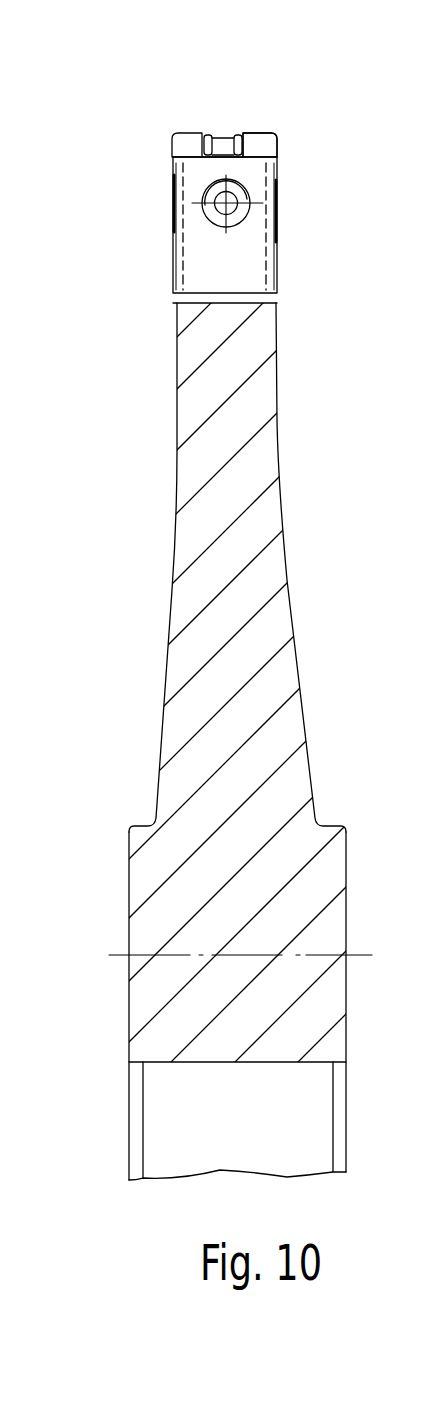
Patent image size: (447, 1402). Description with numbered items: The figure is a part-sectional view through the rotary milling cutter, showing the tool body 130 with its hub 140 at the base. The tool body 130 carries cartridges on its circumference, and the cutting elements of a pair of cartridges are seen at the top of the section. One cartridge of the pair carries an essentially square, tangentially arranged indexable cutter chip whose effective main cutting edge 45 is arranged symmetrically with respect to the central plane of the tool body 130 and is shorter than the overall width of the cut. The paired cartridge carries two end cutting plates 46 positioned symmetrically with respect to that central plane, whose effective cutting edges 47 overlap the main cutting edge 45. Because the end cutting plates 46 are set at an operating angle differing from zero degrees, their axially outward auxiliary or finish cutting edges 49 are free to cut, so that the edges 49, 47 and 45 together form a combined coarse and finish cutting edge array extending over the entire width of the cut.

The effective main cutting edge 45 is at (220, 132).
The end cutting plates 46 is at (175, 150).
The effective cutting edges 47 is at (190, 134).
The auxiliary or finish cutting edges 49 is at (278, 147).
The tool body 130 is at (173, 570).
The hub 140 is at (158, 1032).